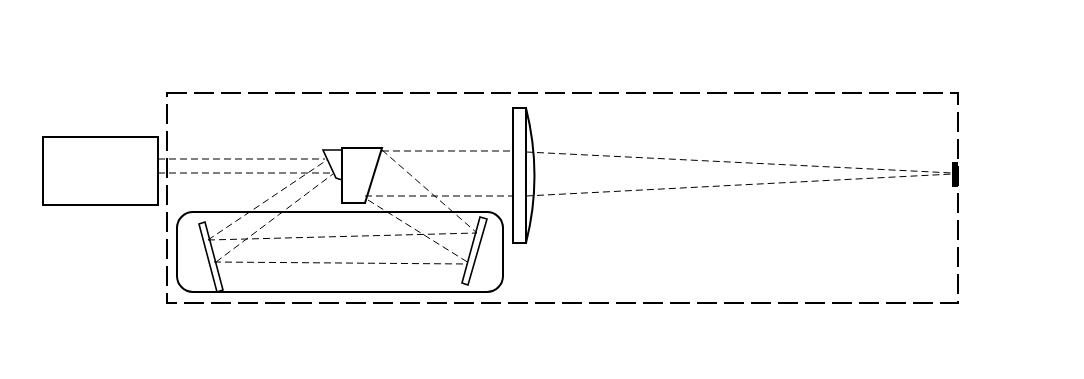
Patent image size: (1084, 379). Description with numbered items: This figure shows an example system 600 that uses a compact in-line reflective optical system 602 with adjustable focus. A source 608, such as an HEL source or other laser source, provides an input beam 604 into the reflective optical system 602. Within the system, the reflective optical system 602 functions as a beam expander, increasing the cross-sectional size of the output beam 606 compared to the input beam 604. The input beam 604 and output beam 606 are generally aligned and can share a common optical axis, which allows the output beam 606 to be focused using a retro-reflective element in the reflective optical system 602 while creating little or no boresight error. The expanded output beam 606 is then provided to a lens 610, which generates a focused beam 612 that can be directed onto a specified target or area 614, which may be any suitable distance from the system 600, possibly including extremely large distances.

The system 600 is at (737, 58).
The reflective optical system 602 is at (340, 92).
The input beam 604 is at (242, 158).
The output beam 606 is at (447, 152).
The source 608 is at (100, 135).
The lens 610 is at (533, 215).
The focused beam 612 is at (737, 187).
The specified target or area 614 is at (950, 170).